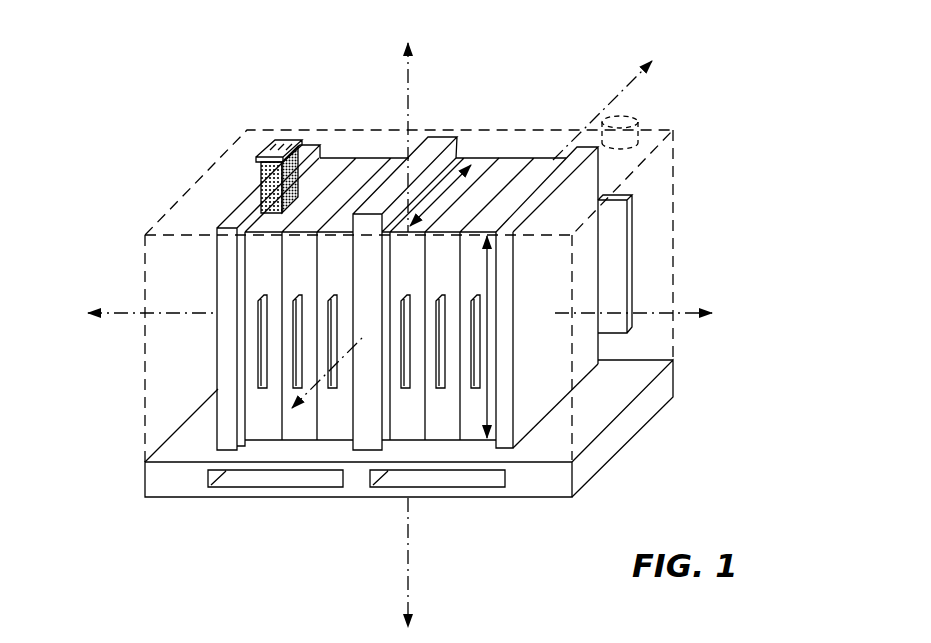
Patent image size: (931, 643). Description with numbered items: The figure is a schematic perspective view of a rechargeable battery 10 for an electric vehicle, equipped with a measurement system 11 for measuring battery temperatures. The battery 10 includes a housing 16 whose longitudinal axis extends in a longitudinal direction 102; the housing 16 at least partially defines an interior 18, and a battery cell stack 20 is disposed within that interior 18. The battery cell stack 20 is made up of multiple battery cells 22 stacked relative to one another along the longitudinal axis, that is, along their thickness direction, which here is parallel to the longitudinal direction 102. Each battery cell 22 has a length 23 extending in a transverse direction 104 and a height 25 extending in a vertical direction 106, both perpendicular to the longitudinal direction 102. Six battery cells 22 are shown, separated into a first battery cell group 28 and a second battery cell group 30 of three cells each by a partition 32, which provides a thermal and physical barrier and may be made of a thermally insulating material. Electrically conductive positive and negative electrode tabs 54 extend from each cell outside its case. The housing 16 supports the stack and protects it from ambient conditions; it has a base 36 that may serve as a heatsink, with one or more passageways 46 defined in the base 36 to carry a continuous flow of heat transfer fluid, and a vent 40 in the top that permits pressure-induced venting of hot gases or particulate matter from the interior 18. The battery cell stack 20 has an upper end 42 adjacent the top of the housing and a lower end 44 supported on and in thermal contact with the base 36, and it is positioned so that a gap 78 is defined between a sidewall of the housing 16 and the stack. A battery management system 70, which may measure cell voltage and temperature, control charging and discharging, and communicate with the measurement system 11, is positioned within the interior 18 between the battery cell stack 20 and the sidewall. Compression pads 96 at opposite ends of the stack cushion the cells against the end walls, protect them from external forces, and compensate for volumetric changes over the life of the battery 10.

The battery 10 is at (155, 164).
The measurement system 11 is at (276, 139).
The housing 16 is at (150, 222).
The interior 18 is at (225, 185).
The battery cell stack 20 is at (361, 157).
The battery cells 22 is at (508, 160).
The length 23 is at (446, 184).
The height 25 is at (487, 397).
The first battery cell group 28 is at (264, 450).
The second battery cell group 30 is at (437, 448).
The partition 32 is at (447, 138).
The base 36 is at (163, 500).
The vent 40 is at (640, 118).
The upper end 42 is at (309, 138).
The lower end 44 is at (532, 450).
The passageways 46 is at (385, 489).
The electrode tabs 54 is at (258, 344).
The battery management system 70 is at (633, 258).
The gap 78 is at (640, 342).
The compression pads 96 is at (218, 378).
The longitudinal direction 102 is at (112, 305).
The transverse direction 104 is at (643, 70).
The vertical direction 106 is at (418, 62).